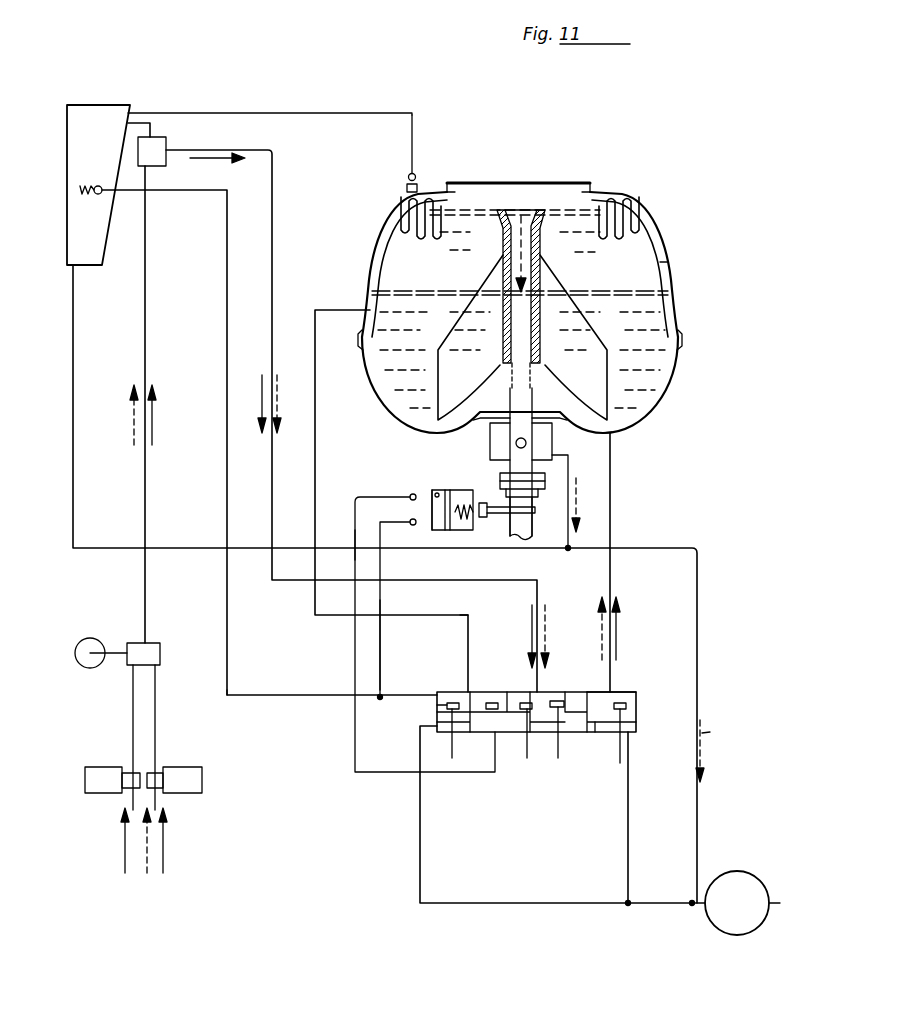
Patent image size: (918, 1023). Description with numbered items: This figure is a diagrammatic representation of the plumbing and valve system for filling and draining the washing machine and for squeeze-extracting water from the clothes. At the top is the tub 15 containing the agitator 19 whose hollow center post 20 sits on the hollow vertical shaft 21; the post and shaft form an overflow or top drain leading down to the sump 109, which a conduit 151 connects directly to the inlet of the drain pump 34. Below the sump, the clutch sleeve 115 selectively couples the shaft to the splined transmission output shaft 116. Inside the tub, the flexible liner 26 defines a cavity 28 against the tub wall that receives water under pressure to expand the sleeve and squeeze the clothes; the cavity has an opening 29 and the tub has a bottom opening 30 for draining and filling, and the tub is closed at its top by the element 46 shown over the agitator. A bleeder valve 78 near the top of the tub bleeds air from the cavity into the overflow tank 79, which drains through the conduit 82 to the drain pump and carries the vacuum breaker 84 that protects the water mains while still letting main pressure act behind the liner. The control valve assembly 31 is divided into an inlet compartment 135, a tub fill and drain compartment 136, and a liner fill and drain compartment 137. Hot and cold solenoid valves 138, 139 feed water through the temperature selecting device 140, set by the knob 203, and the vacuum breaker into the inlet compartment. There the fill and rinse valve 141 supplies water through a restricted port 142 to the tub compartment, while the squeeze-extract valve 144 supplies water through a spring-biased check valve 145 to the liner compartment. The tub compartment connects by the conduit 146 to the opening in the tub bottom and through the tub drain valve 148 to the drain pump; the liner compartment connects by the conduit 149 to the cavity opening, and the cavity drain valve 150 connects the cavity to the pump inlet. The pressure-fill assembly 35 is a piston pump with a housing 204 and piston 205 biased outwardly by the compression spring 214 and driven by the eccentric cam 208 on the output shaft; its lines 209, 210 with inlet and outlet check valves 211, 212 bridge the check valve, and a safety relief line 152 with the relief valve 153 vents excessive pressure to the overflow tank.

The tub 15 is at (666, 412).
The agitator 19 is at (562, 288).
The hollow center post 20 is at (540, 258).
The hollow vertical shaft 21 is at (528, 404).
The flexible liner 26 is at (660, 263).
The cavity 28 is at (640, 214).
The cavity opening 29 is at (368, 310).
The tub opening 30 is at (612, 433).
The control valve assembly 31 is at (620, 672).
The drain pump 34 is at (726, 924).
The pressure-fill assembly 35 is at (438, 470).
The cover 46 is at (534, 181).
The bleeder valve 78 is at (418, 182).
The overflow tank 79 is at (66, 216).
The drain conduit 82 is at (74, 374).
The vacuum breaker 84 is at (166, 143).
The sump 109 is at (492, 440).
The clutch sleeve 115 is at (504, 479).
The transmission output shaft 116 is at (513, 534).
The inlet compartment 135 is at (553, 698).
The tub fill and drain compartment 136 is at (614, 696).
The liner fill and drain compartment 137 is at (464, 694).
The hot solenoid valve 138 is at (128, 773).
The cold solenoid valve 139 is at (158, 774).
The temperature selecting device 140 is at (160, 652).
The fill and rinse valve 141 is at (560, 699).
The restricted port 142 is at (596, 725).
The squeeze-extract valve 144 is at (526, 700).
The check valve 145 is at (490, 700).
The tub conduit 146 is at (611, 580).
The tub drain valve 148 is at (636, 705).
The liner conduit 149 is at (415, 615).
The cavity drain valve 150 is at (437, 708).
The sump conduit 151 is at (698, 637).
The safety relief line 152 is at (312, 696).
The pressure relief valve 153 is at (100, 195).
The setting knob 203 is at (80, 659).
The pump housing 204 is at (444, 488).
The piston 205 is at (445, 530).
The eccentric cam 208 is at (538, 514).
The inlet line 209 is at (350, 504).
The outlet line 210 is at (382, 652).
The inlet check valve 211 is at (410, 492).
The outlet check valve 212 is at (411, 526).
The compression spring 214 is at (490, 515).